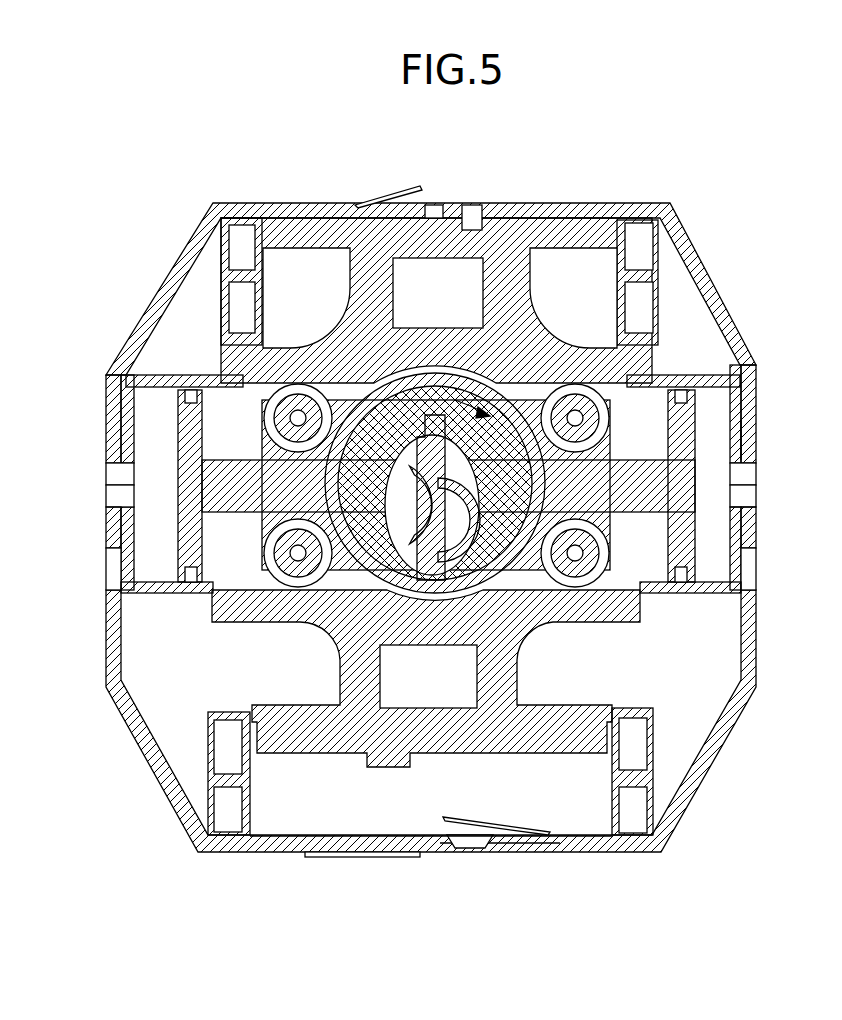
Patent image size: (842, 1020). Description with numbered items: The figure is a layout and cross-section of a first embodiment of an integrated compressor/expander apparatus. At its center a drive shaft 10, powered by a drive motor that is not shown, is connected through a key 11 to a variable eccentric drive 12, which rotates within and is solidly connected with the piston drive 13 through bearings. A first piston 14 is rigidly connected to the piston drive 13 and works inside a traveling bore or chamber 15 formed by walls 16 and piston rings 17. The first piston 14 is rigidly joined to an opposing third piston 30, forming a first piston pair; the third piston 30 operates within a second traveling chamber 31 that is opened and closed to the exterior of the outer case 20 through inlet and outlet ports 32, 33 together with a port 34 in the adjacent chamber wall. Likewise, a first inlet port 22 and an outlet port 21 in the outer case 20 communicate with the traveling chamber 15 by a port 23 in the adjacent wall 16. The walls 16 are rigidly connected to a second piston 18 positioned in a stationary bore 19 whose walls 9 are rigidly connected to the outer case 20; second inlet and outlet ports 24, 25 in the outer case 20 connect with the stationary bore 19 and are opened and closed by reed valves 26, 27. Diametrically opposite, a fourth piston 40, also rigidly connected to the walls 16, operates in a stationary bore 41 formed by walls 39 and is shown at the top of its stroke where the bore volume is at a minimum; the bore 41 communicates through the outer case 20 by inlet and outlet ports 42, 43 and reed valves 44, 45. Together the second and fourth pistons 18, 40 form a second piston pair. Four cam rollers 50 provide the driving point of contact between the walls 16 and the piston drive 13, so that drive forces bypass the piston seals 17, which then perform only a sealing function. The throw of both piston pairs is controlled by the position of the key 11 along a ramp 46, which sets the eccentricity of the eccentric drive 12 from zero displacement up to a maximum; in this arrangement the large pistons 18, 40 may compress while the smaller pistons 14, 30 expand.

The walls of bore 19 9 is at (636, 800).
The drive shaft 10 is at (400, 560).
The key 11 is at (425, 583).
The variable eccentric drive 12 is at (497, 440).
The piston drive 13 is at (618, 462).
The first piston 14 is at (733, 381).
The traveling bore (chamber) 15 is at (728, 410).
The walls 16 is at (718, 345).
The piston rings 17 is at (200, 397).
The second piston 18 is at (540, 730).
The stationary bore 19 is at (578, 815).
The outer case 20 is at (700, 772).
The outlet port 21 is at (752, 492).
The first inlet port 22 is at (754, 562).
The port 23 is at (742, 471).
The second inlet port 24 is at (375, 855).
The second outlet port 25 is at (470, 853).
The reed valve 26 is at (430, 836).
The reed valve 27 is at (477, 822).
The third piston 30 is at (128, 386).
The second traveling chamber 31 is at (152, 440).
The inlet port 32 is at (114, 477).
The outlet port 33 is at (113, 565).
The port 34 is at (128, 492).
The walls 39 is at (648, 242).
The fourth piston 40 is at (265, 240).
The stationary bore 41 is at (312, 217).
The inlet port 42 is at (497, 210).
The outlet port 43 is at (433, 208).
The reed valve 44 is at (475, 208).
The reed valve 45 is at (400, 186).
The ramp 46 is at (466, 592).
The cam rollers 50 is at (330, 400).